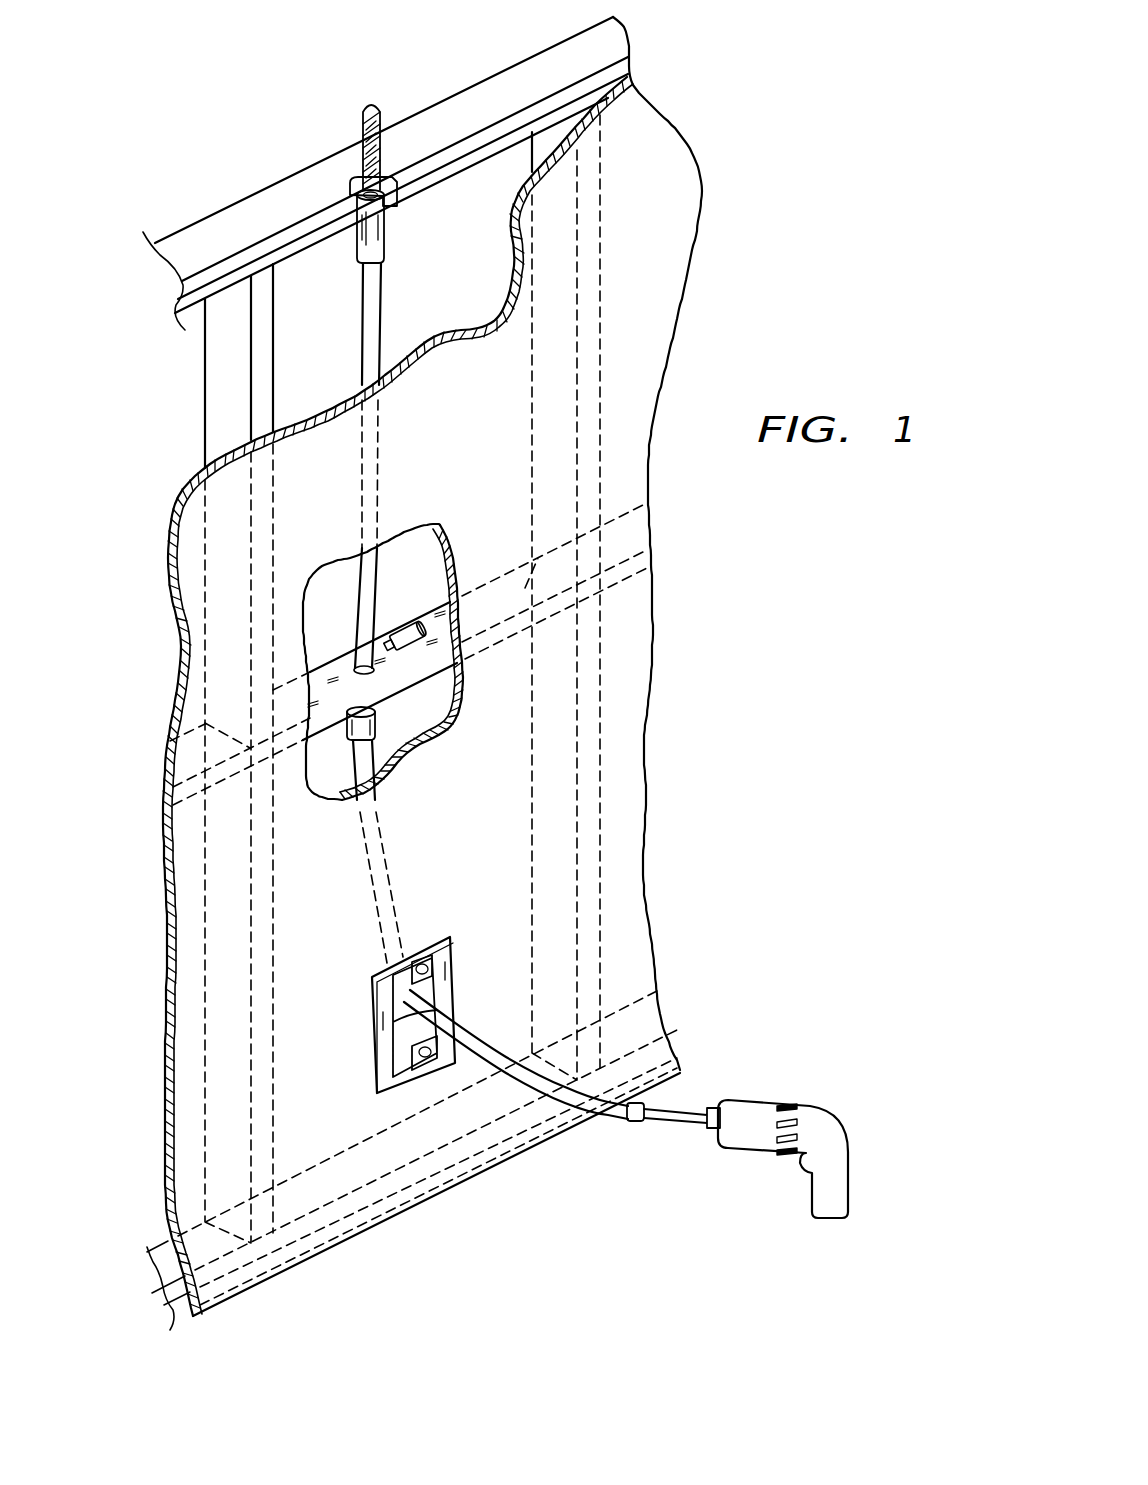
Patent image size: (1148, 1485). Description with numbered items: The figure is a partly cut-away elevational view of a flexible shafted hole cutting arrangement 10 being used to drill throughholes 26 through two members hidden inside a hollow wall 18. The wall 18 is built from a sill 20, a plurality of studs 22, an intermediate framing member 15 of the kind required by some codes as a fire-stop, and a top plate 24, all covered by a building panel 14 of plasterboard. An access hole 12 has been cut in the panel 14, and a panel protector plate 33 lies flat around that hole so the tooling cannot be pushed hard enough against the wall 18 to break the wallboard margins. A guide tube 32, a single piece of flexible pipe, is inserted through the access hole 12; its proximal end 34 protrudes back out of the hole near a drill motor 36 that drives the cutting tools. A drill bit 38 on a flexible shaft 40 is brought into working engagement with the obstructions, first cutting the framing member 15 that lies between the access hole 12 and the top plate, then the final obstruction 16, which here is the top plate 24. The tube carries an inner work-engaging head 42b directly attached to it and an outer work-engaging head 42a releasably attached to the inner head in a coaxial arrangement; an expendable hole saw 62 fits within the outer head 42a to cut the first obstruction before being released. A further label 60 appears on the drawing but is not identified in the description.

The flexible shafted hole cutting arrangement 10 is at (596, 1205).
The access hole 12 is at (410, 1076).
The building panel 14 is at (673, 248).
The intermediate framing member 15 is at (530, 558).
The obstructing member 16 is at (448, 90).
The hollow wall 18 is at (714, 121).
The sill 20 is at (327, 1190).
The studs 22 is at (220, 380).
The top plate 24 is at (423, 127).
The throughholes 26 is at (350, 190).
The guide tube 32 is at (378, 330).
The panel protector plate 33 is at (453, 990).
The proximal end of the guide tube 34 is at (636, 1118).
The drill motor 36 is at (838, 1144).
The drill bit 38 is at (363, 132).
The flexible shaft 40 is at (677, 1110).
The outer work-engaging head 42a is at (467, 717).
The inner work-engaging head 42b is at (384, 235).
The wiring assembly 60 is at (220, 131).
The expendable hole saw 62 is at (470, 610).